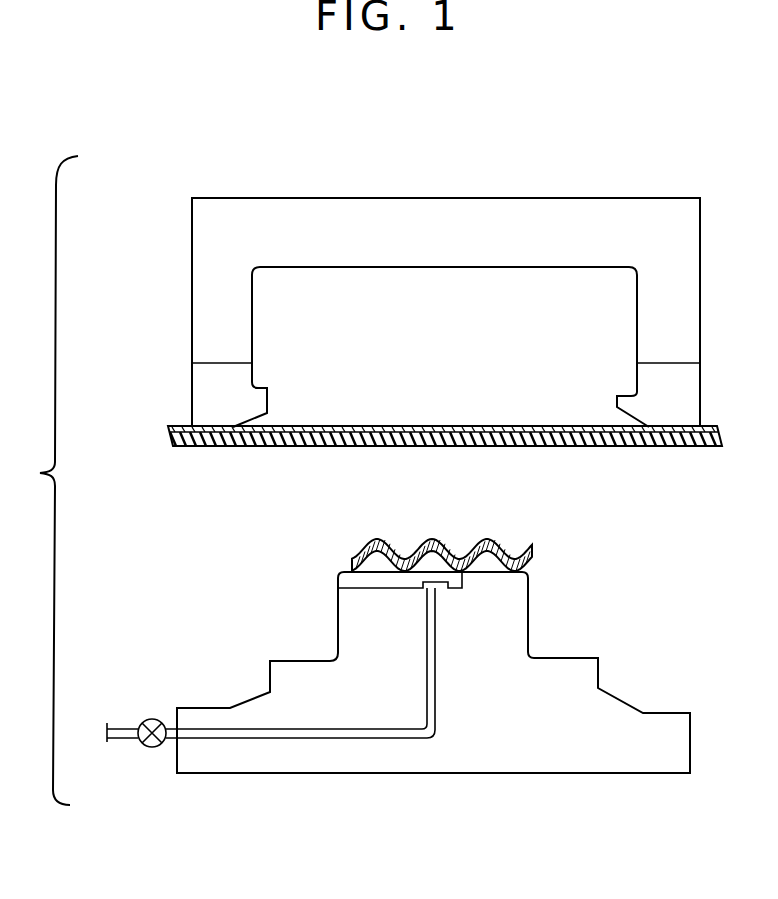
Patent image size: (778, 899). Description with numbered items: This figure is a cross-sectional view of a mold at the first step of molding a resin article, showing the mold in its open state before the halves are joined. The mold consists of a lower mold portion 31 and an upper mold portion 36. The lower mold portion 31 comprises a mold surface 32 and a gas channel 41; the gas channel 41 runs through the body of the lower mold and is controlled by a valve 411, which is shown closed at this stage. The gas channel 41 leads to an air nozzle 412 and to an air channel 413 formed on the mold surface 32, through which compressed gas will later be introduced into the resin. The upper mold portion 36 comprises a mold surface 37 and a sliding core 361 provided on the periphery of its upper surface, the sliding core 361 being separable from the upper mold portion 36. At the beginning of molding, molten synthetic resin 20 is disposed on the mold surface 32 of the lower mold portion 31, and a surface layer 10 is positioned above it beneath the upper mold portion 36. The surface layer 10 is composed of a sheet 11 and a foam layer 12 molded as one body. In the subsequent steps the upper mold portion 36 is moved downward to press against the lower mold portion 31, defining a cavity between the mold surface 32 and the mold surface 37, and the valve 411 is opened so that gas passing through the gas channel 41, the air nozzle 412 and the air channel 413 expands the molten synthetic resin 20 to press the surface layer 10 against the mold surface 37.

The surface layer 10 is at (421, 437).
The sheet 11 is at (190, 432).
The foam layer 12 is at (165, 447).
The molten synthetic resin 20 is at (510, 553).
The lower mold portion 31 is at (352, 665).
The mold surface 32 is at (493, 574).
The upper mold portion 36 is at (202, 241).
The mold surface 37 is at (490, 264).
The sliding core 361 is at (220, 370).
The gas channel 41 is at (228, 735).
The valve 411 is at (152, 718).
The air nozzle 412 is at (436, 586).
The air channel 413 is at (388, 586).